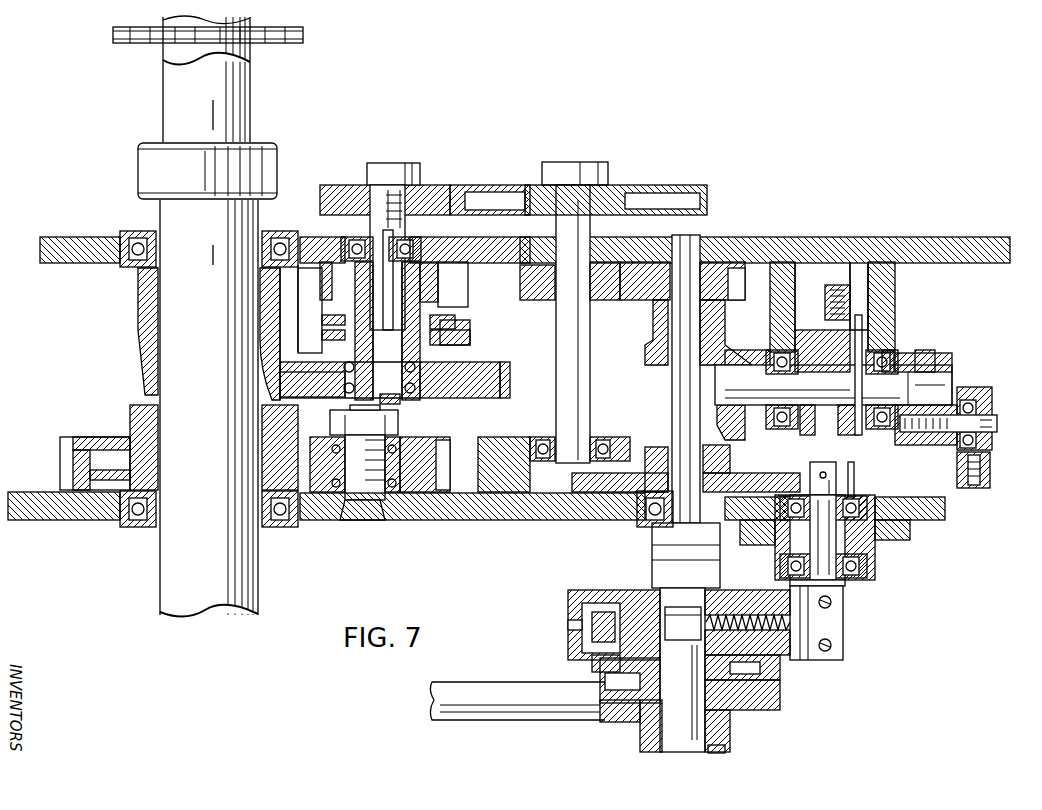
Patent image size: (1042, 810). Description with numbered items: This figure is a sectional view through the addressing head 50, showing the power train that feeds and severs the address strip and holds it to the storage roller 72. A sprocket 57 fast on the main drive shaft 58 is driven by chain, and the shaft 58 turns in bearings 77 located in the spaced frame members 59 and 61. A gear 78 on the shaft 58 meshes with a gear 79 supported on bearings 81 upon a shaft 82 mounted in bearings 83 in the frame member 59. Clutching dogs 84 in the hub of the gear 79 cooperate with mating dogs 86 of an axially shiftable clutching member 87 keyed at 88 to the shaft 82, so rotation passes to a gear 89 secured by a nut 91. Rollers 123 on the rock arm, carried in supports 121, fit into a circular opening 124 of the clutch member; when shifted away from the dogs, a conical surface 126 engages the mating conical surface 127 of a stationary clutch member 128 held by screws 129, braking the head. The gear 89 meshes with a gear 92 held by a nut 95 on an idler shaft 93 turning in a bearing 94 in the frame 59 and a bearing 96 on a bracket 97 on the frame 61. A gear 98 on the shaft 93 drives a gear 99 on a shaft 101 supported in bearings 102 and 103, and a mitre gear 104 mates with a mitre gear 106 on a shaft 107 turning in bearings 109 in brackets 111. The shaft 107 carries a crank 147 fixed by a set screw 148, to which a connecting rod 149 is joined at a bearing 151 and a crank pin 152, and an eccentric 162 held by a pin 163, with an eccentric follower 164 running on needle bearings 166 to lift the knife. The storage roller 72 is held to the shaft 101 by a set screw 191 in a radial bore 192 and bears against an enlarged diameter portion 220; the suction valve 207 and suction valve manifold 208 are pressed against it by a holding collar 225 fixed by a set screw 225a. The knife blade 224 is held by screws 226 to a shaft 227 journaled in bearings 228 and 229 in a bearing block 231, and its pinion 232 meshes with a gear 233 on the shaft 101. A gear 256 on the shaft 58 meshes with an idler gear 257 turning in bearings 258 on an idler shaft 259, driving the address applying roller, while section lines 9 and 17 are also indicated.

The addressing head 50 is at (800, 212).
The sprocket 57 is at (280, 45).
The main drive shaft 58 is at (252, 108).
The frame member 59 is at (68, 237).
The frame member 61 is at (48, 522).
The storage roller 72 is at (580, 590).
The bearings 77 is at (272, 232).
The gear 78 is at (138, 310).
The gear 79 is at (502, 398).
The bearings 81 is at (402, 398).
The shaft 82 is at (385, 412).
The bearings 83 is at (400, 230).
The clutching dogs 84 is at (450, 366).
The mating dogs 86 is at (455, 340).
The clutching member 87 is at (440, 298).
The key 88 is at (379, 377).
The gear 89 is at (345, 195).
The nut 91 is at (398, 168).
The gear 92 is at (490, 190).
The idler shaft 93 is at (595, 200).
The bearing 94 is at (600, 300).
The nut 95 is at (592, 165).
The bearing 96 is at (605, 440).
The bracket 97 is at (478, 445).
The gear 98 is at (532, 302).
The gear 99 is at (720, 285).
The shaft 101 is at (698, 250).
The bearing 102 is at (642, 262).
The bearing 103 is at (650, 522).
The mitre gear 104 is at (722, 332).
The mitre gear 106 is at (730, 420).
The shaft 107 is at (750, 372).
The bearings 109 is at (808, 330).
The brackets 111 is at (795, 275).
The supports 121 is at (298, 300).
The roller 123 is at (460, 312).
The circular opening 124 is at (452, 320).
The conical surface 126 is at (440, 262).
The mating conical surface 127 is at (331, 319).
The stationary clutch member 128 is at (305, 262).
The screws 129 is at (325, 268).
The crank 147 is at (955, 364).
The set screw 148 is at (928, 352).
The connecting rod 149 is at (990, 468).
The bearing 151 is at (988, 396).
The crank pin 152 is at (994, 423).
The eccentric 162 is at (830, 408).
The pin 163 is at (895, 292).
The eccentric follower 164 is at (858, 318).
The needle bearings 166 is at (878, 300).
The set screw 191 is at (735, 615).
The radial bore 192 is at (768, 625).
The suction valve 207 is at (782, 672).
The suction valve manifold 208 is at (782, 702).
The enlarged diameter portion 220 is at (665, 575).
The knife blade 224 is at (835, 615).
The holding collar 225 is at (718, 762).
The set screw 225a is at (732, 735).
The screws 226 is at (838, 645).
The shaft 227 is at (848, 585).
The bearing 228 is at (878, 556).
The bearing 229 is at (870, 495).
The bearing block 231 is at (905, 502).
The pinion 232 is at (838, 480).
The gear 233 is at (765, 478).
The gear 256 is at (80, 440).
The idler gear 257 is at (425, 494).
The bearings 258 is at (392, 494).
The idler shaft 259 is at (358, 502).
The section line 9 is at (541, 636).
The section line 17 is at (535, 746).